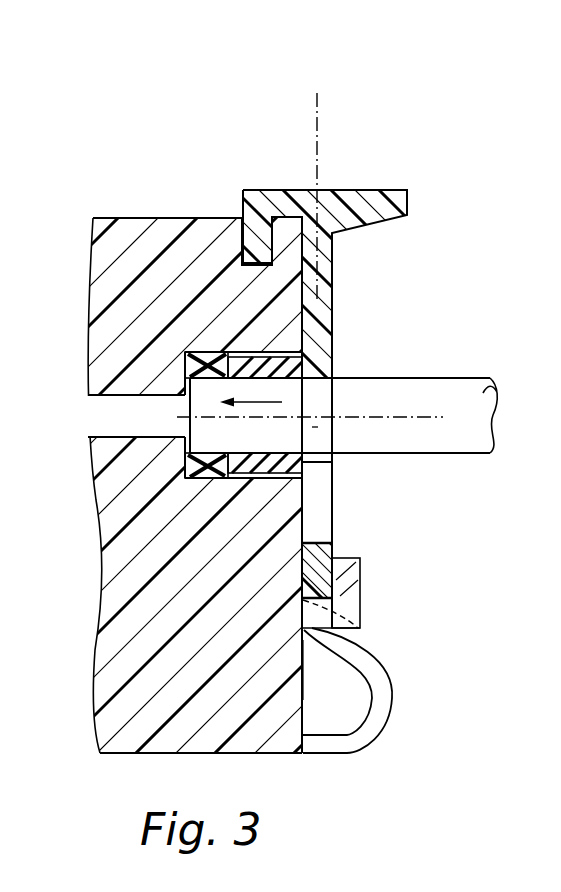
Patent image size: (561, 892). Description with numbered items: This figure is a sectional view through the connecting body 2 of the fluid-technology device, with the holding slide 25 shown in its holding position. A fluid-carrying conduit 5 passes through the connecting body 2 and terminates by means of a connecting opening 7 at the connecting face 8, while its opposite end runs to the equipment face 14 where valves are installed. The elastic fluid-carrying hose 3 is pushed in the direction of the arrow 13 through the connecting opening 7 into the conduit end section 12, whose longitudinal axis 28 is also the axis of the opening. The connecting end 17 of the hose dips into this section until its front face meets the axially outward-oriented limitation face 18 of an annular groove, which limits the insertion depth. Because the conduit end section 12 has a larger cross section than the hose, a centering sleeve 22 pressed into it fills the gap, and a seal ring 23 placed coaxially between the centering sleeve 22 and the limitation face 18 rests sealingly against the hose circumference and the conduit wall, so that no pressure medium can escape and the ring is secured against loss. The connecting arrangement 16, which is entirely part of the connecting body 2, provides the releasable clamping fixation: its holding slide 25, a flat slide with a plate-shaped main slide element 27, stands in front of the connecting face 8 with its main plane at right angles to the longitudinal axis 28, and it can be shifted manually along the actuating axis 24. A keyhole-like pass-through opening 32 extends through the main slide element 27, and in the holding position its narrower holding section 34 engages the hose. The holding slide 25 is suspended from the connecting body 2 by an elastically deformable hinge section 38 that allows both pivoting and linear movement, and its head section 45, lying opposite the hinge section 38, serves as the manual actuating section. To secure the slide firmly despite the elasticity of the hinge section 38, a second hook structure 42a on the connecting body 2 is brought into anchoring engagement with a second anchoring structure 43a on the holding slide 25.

The connecting body 2 is at (115, 715).
The fluid-carrying hose 3 is at (450, 397).
The fluid-carrying conduit 5 is at (113, 419).
The connecting opening 7 is at (322, 343).
The connecting face 8 is at (321, 652).
The conduit end section 12 is at (247, 352).
The arrow 13 is at (190, 480).
The equipment face 14 is at (128, 214).
The connecting arrangement 16 is at (382, 178).
The connecting end 17 is at (202, 437).
The limitation face 18 is at (200, 398).
The centering sleeve 22 is at (248, 465).
The seal ring 23 is at (183, 365).
The actuating axis 24 is at (313, 107).
The holding slide 25 is at (326, 263).
The main slide element 27 is at (320, 288).
The longitudinal axis 28 is at (423, 417).
The pass-through opening 32 is at (320, 485).
The holding section 34 is at (318, 427).
The hinge section 38 is at (389, 729).
The second hook structure 42a is at (348, 573).
The second anchoring structure 43a is at (323, 550).
The head section 45 is at (355, 190).